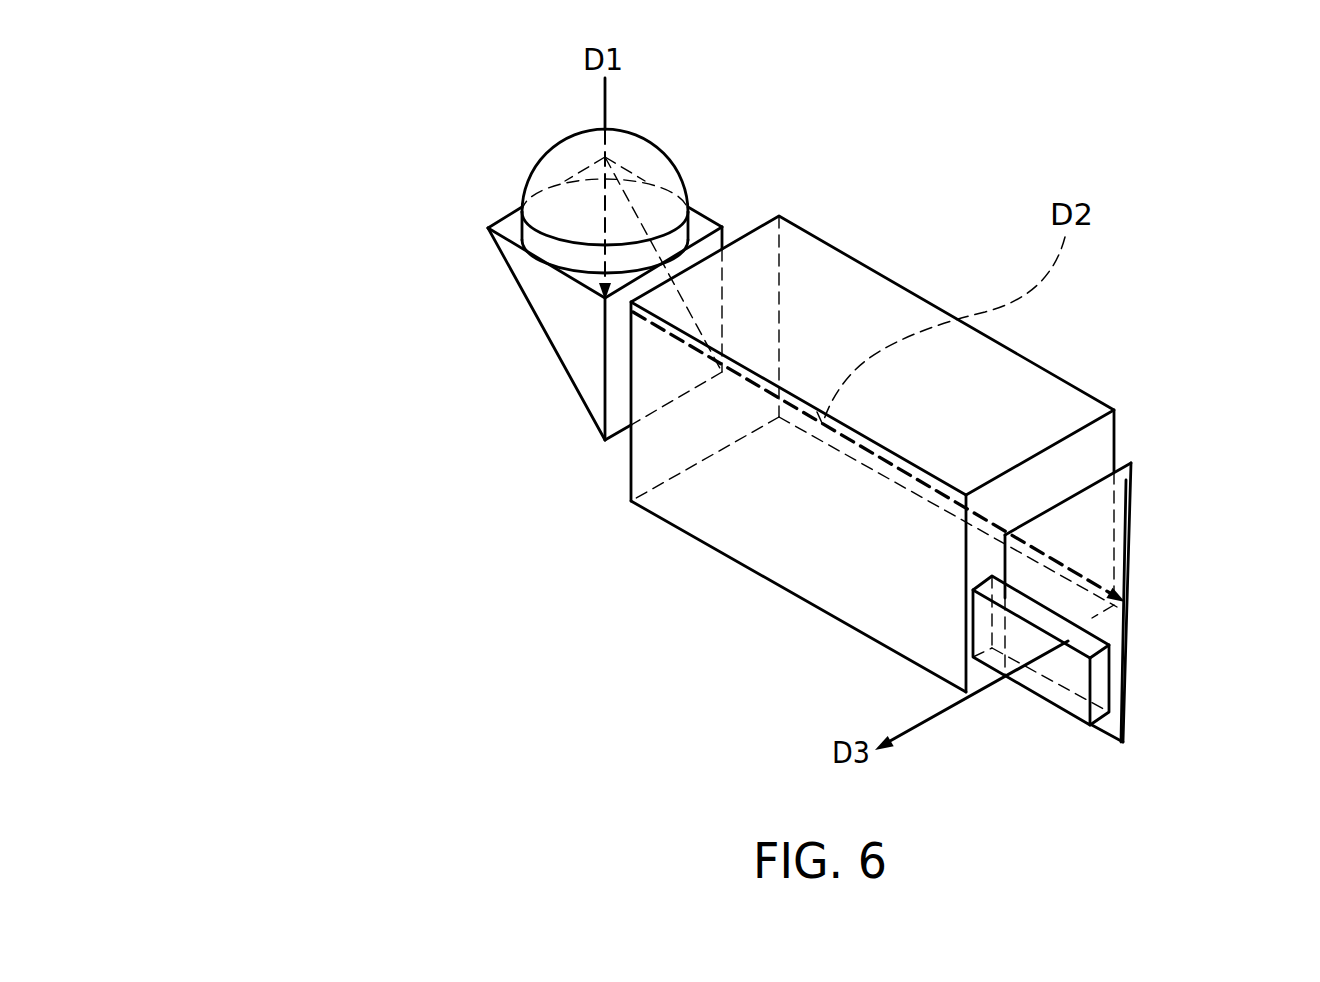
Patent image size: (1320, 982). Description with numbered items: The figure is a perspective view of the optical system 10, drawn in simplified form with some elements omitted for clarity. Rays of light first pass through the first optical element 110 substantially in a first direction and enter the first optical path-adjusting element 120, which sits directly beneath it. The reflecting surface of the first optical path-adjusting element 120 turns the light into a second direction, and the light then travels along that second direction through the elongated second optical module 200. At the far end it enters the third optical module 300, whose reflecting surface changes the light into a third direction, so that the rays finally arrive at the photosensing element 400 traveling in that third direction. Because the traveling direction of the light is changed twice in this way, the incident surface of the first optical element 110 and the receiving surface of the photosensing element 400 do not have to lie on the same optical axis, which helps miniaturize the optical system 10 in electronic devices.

The optical system 10 is at (281, 89).
The first optical element 110 is at (553, 160).
The first optical path-adjusting element 120 is at (533, 287).
The second optical module 200 is at (730, 527).
The third optical module 300 is at (1103, 532).
The photosensing element 400 is at (1068, 680).